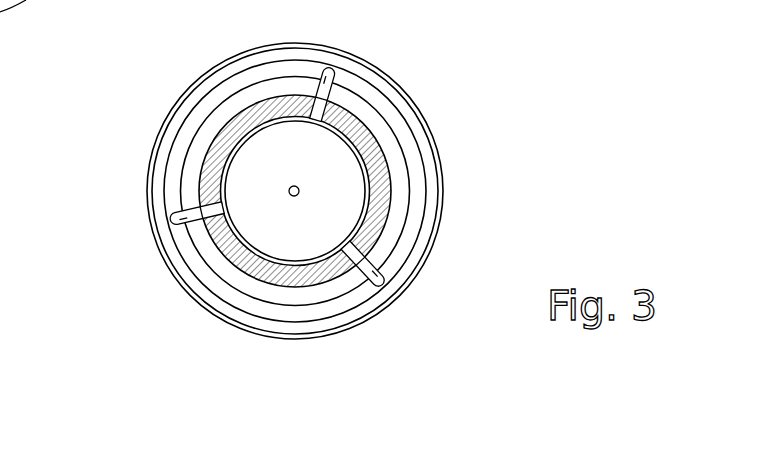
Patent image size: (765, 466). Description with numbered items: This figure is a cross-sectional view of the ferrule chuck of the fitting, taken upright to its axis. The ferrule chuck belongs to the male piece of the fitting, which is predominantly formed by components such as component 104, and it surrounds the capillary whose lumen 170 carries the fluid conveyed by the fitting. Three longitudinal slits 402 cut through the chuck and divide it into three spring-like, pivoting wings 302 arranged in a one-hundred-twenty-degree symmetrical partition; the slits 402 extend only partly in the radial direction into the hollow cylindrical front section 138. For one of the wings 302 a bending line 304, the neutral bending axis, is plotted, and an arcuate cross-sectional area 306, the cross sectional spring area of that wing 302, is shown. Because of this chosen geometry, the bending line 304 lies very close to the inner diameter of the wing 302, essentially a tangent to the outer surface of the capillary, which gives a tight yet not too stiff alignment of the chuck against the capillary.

The hollow cylindrical front section 138 is at (433, 174).
The lumen 170 is at (289, 187).
The wings 302 is at (284, 104).
The bending line 304 is at (222, 150).
The arcuate cross-sectional area 306 is at (218, 170).
The longitudinal slits 402 is at (340, 69).
The component of the male piece 104 is at (515, 0).